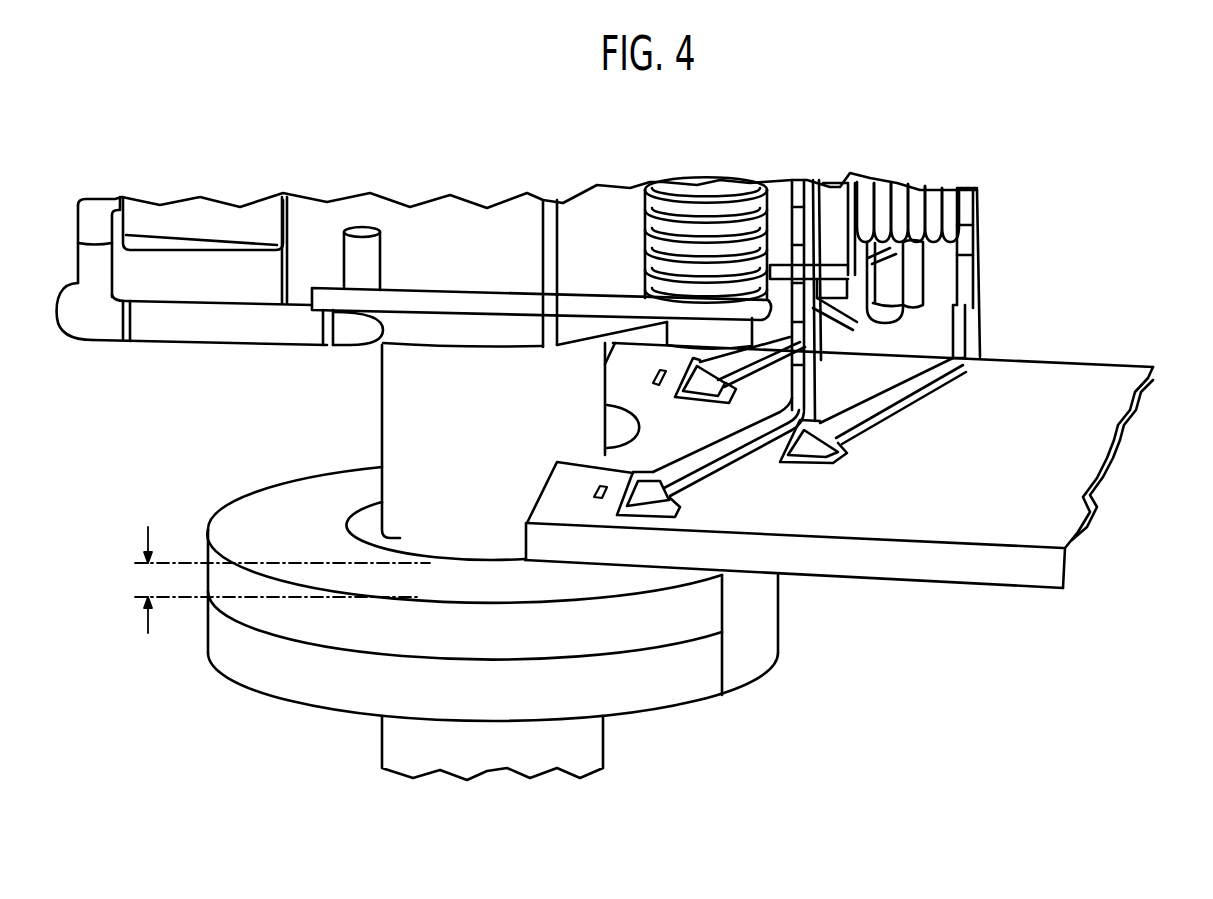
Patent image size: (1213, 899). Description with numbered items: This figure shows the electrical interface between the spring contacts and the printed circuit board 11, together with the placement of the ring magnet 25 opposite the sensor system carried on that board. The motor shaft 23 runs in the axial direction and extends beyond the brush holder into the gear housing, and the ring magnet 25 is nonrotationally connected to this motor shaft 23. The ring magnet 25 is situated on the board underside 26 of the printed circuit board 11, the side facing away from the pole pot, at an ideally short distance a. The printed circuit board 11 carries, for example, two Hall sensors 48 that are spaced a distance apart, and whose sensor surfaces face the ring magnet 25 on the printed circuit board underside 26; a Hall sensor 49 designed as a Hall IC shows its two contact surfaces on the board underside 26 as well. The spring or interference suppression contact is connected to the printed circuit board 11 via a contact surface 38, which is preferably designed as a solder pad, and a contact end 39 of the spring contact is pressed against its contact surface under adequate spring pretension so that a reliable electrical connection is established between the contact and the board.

The printed circuit board 11 is at (1080, 473).
The motor shaft 23 is at (490, 757).
The ring magnet 25 is at (293, 678).
The board underside 26 is at (893, 594).
The contact surface 38 is at (800, 463).
The contact end 39 is at (822, 463).
The Hall sensor 48 is at (668, 392).
The Hall sensor 49 is at (650, 374).
The distance a is at (147, 629).